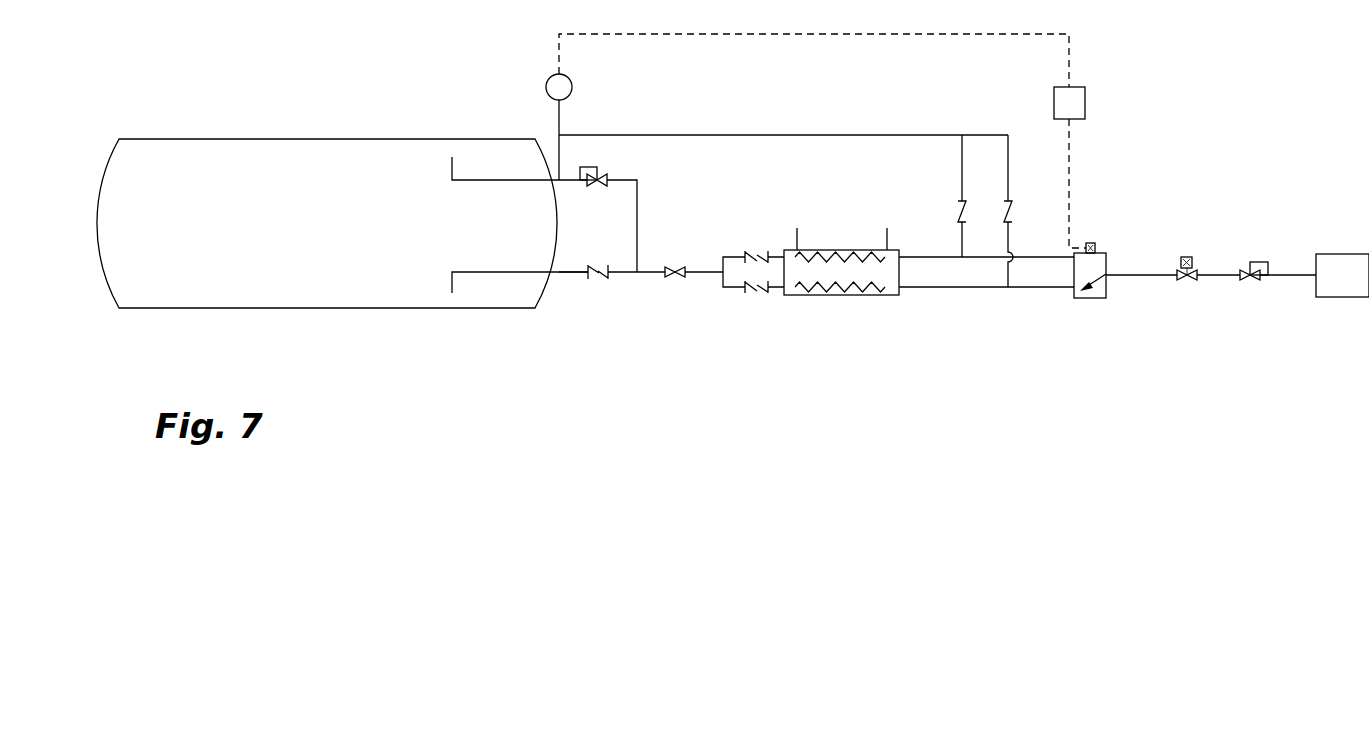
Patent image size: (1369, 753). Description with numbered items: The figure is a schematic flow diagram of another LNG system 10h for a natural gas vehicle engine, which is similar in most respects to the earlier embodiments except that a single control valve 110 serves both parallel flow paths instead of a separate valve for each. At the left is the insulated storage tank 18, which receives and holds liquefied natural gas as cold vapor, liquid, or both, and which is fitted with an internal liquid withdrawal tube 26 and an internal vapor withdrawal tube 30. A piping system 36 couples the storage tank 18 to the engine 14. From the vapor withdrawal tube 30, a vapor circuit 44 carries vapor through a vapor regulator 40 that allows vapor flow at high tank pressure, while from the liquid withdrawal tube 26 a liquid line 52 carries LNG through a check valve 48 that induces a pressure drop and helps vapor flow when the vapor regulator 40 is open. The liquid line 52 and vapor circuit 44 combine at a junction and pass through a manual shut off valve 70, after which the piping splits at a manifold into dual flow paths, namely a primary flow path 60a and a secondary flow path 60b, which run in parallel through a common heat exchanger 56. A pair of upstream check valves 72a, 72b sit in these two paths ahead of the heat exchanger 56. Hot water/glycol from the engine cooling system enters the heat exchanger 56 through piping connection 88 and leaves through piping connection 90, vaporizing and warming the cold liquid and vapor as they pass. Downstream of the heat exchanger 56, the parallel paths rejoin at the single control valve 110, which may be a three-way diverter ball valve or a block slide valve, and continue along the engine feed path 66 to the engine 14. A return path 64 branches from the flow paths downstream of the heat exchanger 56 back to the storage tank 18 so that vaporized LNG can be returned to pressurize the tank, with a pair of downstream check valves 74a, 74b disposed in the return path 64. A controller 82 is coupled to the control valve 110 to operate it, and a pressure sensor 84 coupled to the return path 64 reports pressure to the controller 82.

The LNG system 10h is at (486, 344).
The engine 14 is at (1338, 254).
The storage tank 18 is at (373, 138).
The internal liquid withdrawal tube 26 is at (452, 285).
The internal vapor withdrawal tube 30 is at (452, 166).
The piping system 36 is at (912, 100).
The vapor regulator 40 is at (597, 167).
The vapor circuit 44 is at (637, 196).
The check valve 48 is at (606, 278).
The liquid line 52 is at (573, 276).
The heat exchanger 56 is at (810, 296).
The primary flow path 60a is at (838, 250).
The secondary flow path 60b is at (858, 296).
The return path 64 is at (805, 135).
The engine feed path 66 is at (1130, 295).
The manual shut off valve 70 is at (680, 283).
The upstream check valve 72a is at (760, 250).
The upstream check valve 72b is at (757, 298).
The downstream check valve 74a is at (955, 212).
The downstream check valve 74b is at (1013, 212).
The controller 82 is at (1085, 105).
The pressure sensor 84 is at (547, 90).
The piping connection 88 is at (795, 236).
The piping connection 90 is at (889, 236).
The single control valve 110 is at (1090, 240).